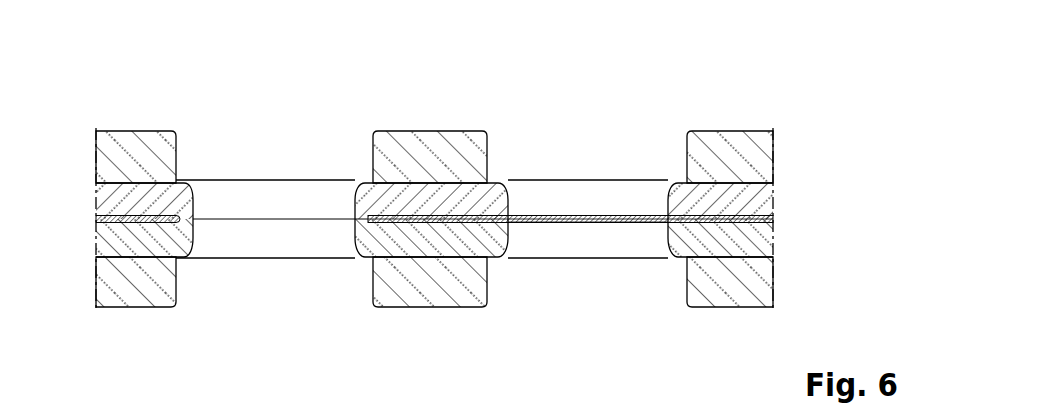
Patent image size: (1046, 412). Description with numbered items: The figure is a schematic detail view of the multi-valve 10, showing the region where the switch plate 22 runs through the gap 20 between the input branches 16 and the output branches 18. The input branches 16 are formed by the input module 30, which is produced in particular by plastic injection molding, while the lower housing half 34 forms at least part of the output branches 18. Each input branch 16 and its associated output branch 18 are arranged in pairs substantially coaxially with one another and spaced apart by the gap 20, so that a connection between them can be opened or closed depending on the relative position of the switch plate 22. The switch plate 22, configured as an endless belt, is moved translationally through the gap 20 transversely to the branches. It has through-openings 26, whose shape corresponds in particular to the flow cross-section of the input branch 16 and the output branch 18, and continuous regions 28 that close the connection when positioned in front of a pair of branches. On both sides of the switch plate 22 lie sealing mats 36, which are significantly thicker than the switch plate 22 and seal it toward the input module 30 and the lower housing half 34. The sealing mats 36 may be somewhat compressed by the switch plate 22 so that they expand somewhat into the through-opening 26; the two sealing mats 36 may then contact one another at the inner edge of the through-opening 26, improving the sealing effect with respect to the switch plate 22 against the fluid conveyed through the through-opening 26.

The multi-valve 10 is at (772, 94).
The input branch 16 is at (240, 140).
The output branch 18 is at (235, 295).
The gap 20 is at (790, 218).
The switch plate 22 is at (647, 219).
The through-opening 26 is at (317, 228).
The continuous region 28 is at (614, 222).
The input module 30 is at (130, 133).
The lower housing half 34 is at (142, 297).
The sealing mat 36 is at (390, 203).